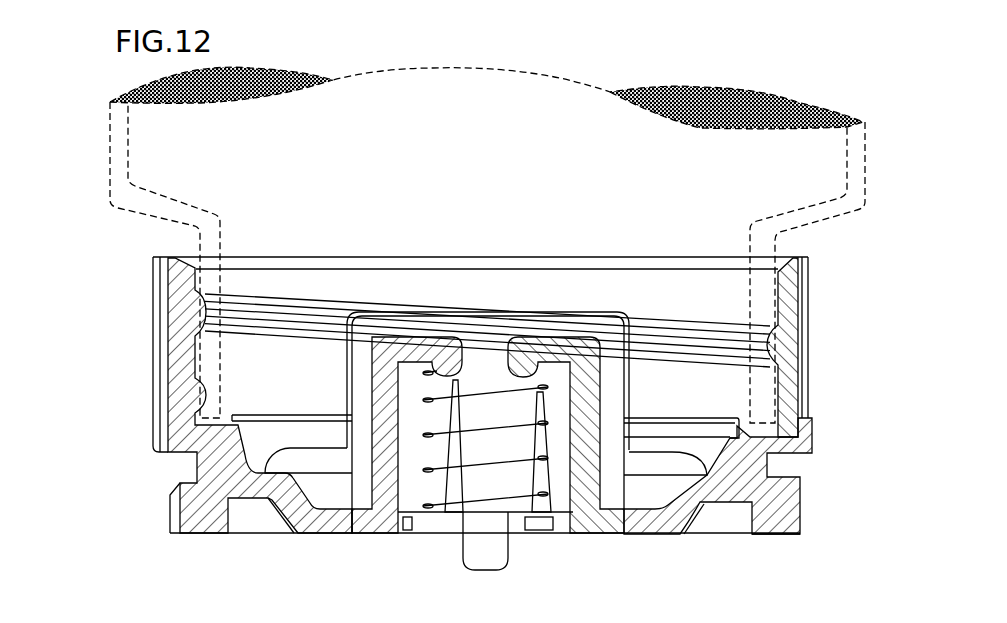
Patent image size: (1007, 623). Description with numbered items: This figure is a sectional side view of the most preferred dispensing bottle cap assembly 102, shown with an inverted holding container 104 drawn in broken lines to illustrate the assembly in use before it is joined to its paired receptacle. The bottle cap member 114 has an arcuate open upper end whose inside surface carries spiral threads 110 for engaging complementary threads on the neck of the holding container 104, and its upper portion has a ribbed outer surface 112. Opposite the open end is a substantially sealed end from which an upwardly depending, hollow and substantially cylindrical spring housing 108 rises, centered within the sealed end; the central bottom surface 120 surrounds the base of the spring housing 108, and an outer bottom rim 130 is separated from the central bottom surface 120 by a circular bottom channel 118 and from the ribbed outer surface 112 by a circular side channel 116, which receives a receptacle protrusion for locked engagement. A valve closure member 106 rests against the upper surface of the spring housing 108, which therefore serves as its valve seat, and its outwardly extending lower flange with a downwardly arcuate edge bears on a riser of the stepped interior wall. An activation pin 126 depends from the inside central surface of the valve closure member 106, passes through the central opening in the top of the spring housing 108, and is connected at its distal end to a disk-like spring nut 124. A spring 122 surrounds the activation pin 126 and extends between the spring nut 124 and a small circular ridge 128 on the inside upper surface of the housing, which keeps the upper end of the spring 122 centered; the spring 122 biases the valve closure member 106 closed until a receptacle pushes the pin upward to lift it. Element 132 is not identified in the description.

The dispensing bottle cap assembly 102 is at (122, 264).
The holding container 104 is at (160, 155).
The valve closure member 106 is at (568, 323).
The spring housing 108 is at (587, 390).
The spiral threads 110 is at (315, 296).
The ribbed outer surface 112 is at (160, 356).
The bottle cap member 114 is at (168, 432).
The circular side channel 116 is at (790, 467).
The circular bottom channel 118 is at (253, 518).
The central bottom surface 120 is at (630, 540).
The spring 122 is at (423, 513).
The disk-like spring nut 124 is at (540, 522).
The activation pin 126 is at (478, 545).
The circular ridge 128 is at (447, 356).
The outer bottom rim 130 is at (185, 517).
The base element 132 is at (792, 578).